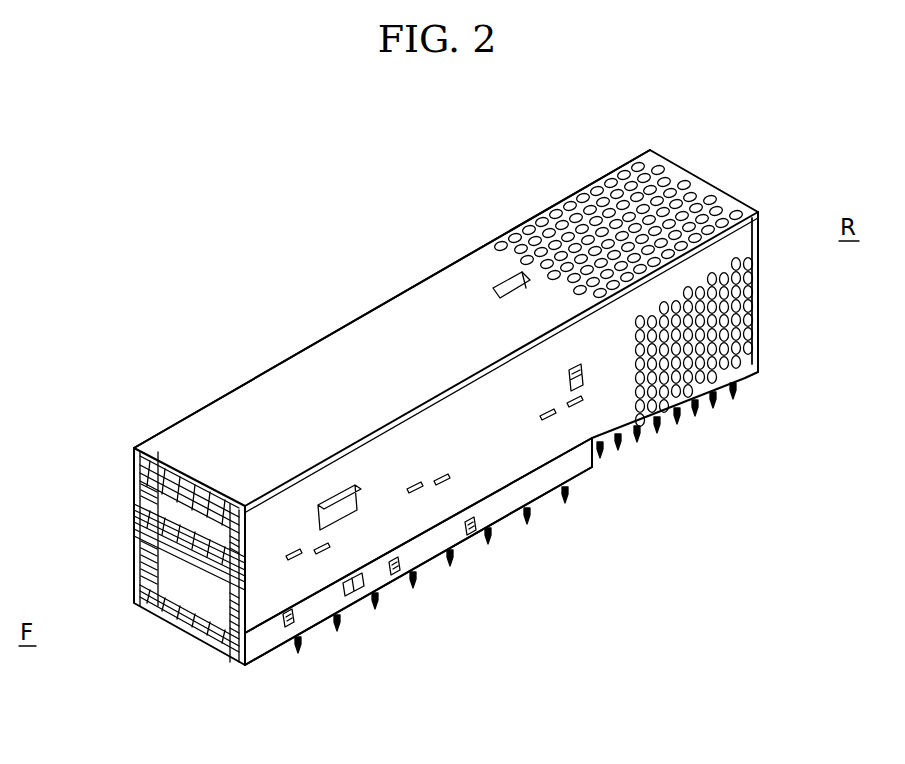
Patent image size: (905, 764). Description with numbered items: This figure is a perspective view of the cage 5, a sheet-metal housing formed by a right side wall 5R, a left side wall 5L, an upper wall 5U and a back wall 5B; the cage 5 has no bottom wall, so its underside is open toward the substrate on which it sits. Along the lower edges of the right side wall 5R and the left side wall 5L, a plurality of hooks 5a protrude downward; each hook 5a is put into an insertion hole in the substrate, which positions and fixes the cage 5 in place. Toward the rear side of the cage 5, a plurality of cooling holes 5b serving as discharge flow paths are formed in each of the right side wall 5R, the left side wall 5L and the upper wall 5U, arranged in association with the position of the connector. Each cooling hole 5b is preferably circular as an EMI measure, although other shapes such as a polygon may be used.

The cage 5 is at (202, 334).
The upper wall 5U is at (327, 373).
The left side wall 5L is at (413, 282).
The right side wall 5R is at (505, 463).
The back wall 5B is at (757, 288).
The hooks 5a is at (337, 625).
The cooling holes 5b is at (602, 203).